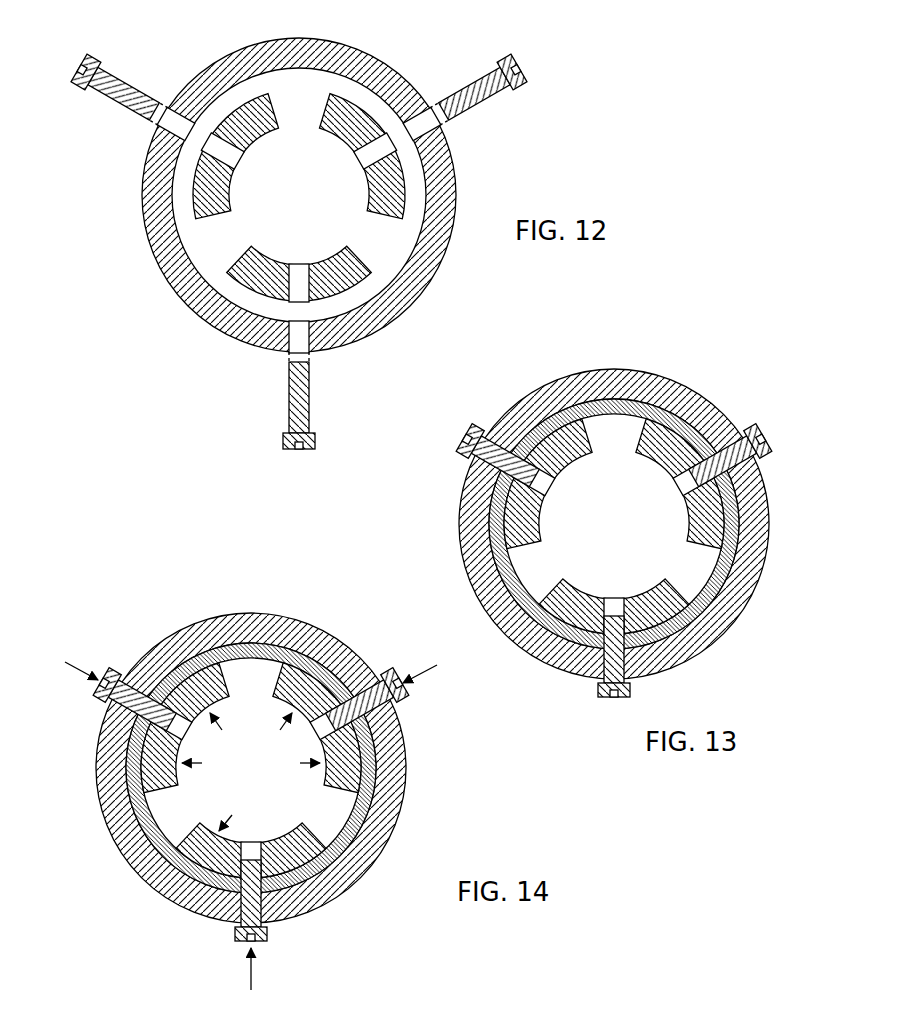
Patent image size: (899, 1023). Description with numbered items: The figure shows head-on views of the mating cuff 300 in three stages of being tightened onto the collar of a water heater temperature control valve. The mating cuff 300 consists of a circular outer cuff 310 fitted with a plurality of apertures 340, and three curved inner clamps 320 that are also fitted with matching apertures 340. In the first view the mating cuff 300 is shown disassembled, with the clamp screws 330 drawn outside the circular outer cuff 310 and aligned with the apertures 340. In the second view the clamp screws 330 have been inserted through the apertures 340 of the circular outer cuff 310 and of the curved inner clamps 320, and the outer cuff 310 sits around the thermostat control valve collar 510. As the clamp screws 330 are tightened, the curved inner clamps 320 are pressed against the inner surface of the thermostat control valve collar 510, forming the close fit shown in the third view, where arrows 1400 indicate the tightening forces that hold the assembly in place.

In FIG. 12, the mating cuff 300 is at (341, 180).
In FIG. 13, the mating cuff 300 is at (649, 506).
In FIG. 14, the mating cuff 300 is at (251, 748).
In FIG. 12, the circular outer cuff 310 is at (341, 195).
In FIG. 13, the circular outer cuff 310 is at (623, 520).
In FIG. 14, the circular outer cuff 310 is at (251, 750).
In FIG. 12, the curved inner clamps 320 is at (326, 221).
In FIG. 13, the curved inner clamps 320 is at (608, 558).
In FIG. 14, the curved inner clamps 320 is at (309, 770).
In FIG. 12, the clamp screws 330 is at (332, 244).
In FIG. 13, the clamp screws 330 is at (649, 556).
In FIG. 14, the clamp screws 330 is at (279, 789).
In FIG. 12, the apertures 340 is at (299, 245).
In FIG. 13, the apertures 340 is at (614, 547).
In FIG. 14, the apertures 340 is at (251, 791).
In FIG. 13, the thermostat control valve collar 510 is at (664, 524).
In FIG. 14, the thermostat control valve collar 510 is at (251, 733).
In FIG. 14, the applied forces 1400 is at (232, 800).